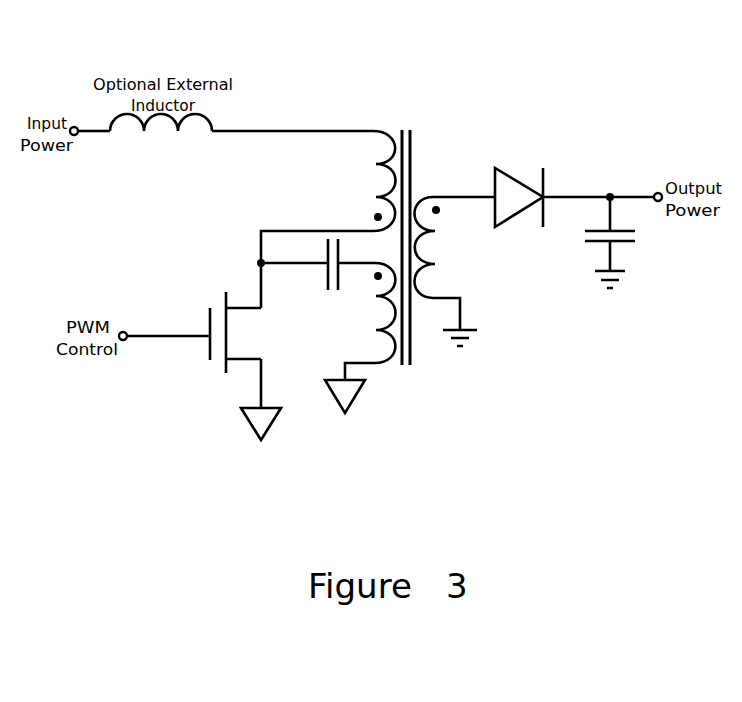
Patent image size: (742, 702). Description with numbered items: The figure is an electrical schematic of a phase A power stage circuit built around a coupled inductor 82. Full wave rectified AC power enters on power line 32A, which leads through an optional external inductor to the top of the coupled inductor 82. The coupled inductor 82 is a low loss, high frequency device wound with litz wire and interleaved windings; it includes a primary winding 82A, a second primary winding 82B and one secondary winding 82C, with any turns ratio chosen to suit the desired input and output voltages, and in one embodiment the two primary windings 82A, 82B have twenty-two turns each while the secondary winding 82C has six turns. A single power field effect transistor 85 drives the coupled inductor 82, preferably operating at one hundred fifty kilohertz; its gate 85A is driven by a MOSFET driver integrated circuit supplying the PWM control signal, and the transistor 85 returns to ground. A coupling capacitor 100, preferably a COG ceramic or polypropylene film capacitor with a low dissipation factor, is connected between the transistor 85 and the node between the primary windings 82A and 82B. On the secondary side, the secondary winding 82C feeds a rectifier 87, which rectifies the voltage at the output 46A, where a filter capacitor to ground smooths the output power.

The power line 32A is at (87, 130).
The coupled inductor 82 is at (440, 92).
The primary winding 82A is at (373, 130).
The primary winding 82B is at (376, 364).
The secondary winding 82C is at (443, 197).
The power field effect transistor 85 is at (243, 308).
The gate 85A is at (175, 336).
The rectifier 87 is at (513, 178).
The coupling capacitor 100 is at (310, 284).
The output 46A is at (657, 193).